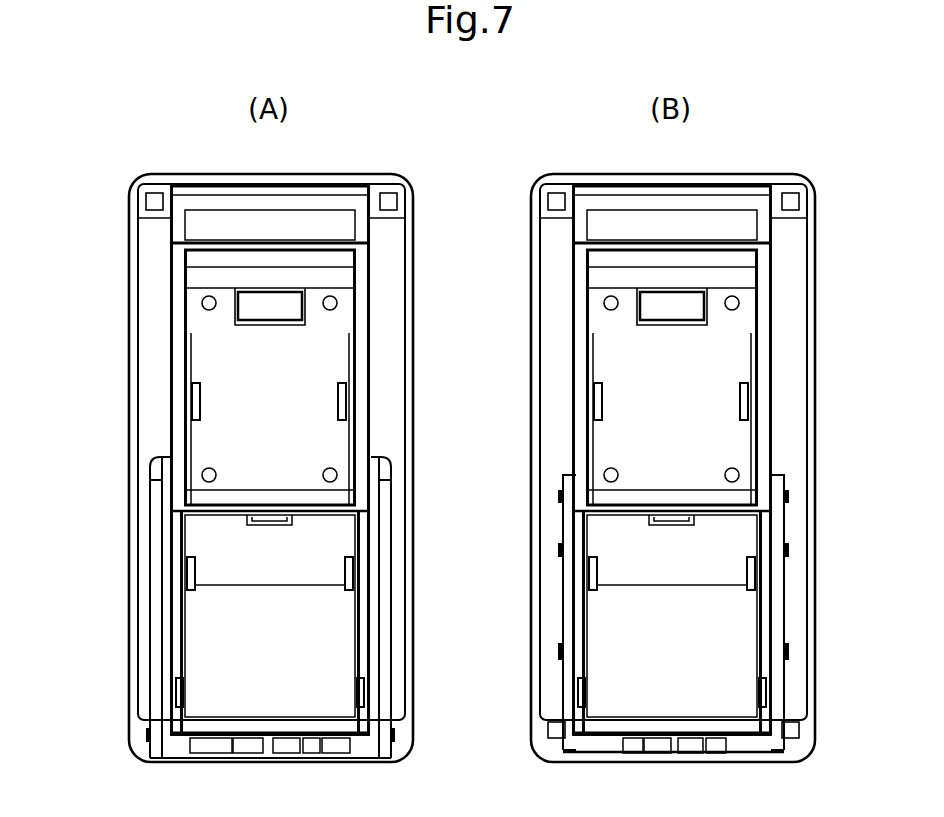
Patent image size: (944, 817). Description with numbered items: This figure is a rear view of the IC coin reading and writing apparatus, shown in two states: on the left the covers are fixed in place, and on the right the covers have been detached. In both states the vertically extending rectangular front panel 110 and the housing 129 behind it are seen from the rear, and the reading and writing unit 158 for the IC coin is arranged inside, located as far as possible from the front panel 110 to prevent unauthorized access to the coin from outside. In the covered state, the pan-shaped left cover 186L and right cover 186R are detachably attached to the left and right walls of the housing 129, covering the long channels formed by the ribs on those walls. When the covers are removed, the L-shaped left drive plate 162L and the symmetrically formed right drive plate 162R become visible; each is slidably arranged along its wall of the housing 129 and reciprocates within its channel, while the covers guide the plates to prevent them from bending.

The front panel 110 is at (530, 221).
The housing 129 is at (581, 264).
The reading and writing unit 158 is at (620, 376).
The left cover 186L is at (152, 550).
The right cover 186R is at (383, 585).
The left drive plate 162L is at (567, 533).
The right drive plate 162R is at (777, 585).